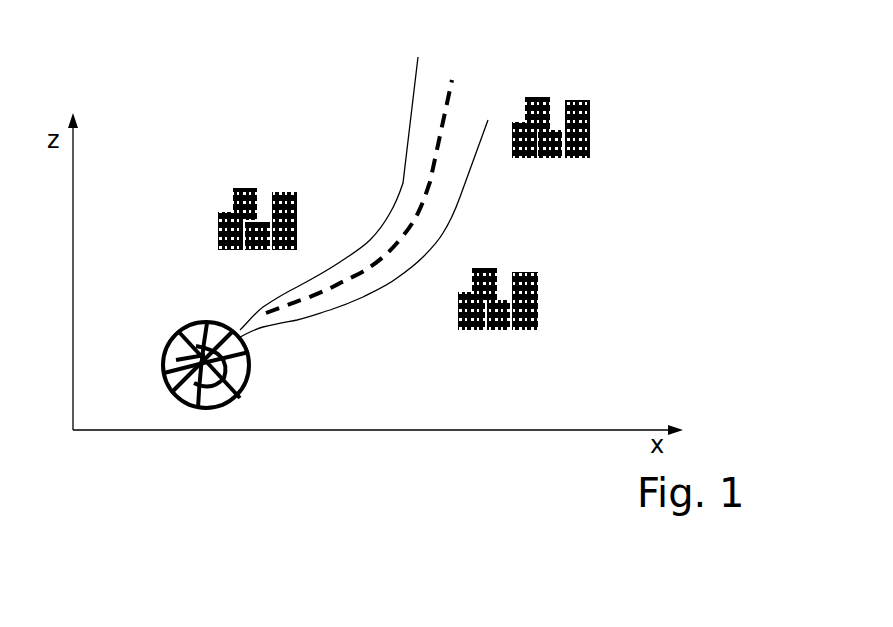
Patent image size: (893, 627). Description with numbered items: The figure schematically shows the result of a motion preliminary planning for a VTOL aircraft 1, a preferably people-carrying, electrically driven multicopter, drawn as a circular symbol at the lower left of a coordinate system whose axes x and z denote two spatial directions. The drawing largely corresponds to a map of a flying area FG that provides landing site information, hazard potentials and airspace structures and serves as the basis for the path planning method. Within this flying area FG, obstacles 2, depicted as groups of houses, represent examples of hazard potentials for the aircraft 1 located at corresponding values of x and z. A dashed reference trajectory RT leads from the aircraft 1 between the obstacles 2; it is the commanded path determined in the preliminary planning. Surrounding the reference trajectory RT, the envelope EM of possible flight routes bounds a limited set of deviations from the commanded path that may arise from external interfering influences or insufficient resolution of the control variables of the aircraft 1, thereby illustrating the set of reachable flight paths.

The VTOL aircraft 1 is at (185, 285).
The obstacles 2 is at (464, 179).
The reference trajectory RT is at (359, 196).
The envelope of possible flight routes EM is at (397, 176).
The flying area FG is at (386, 384).